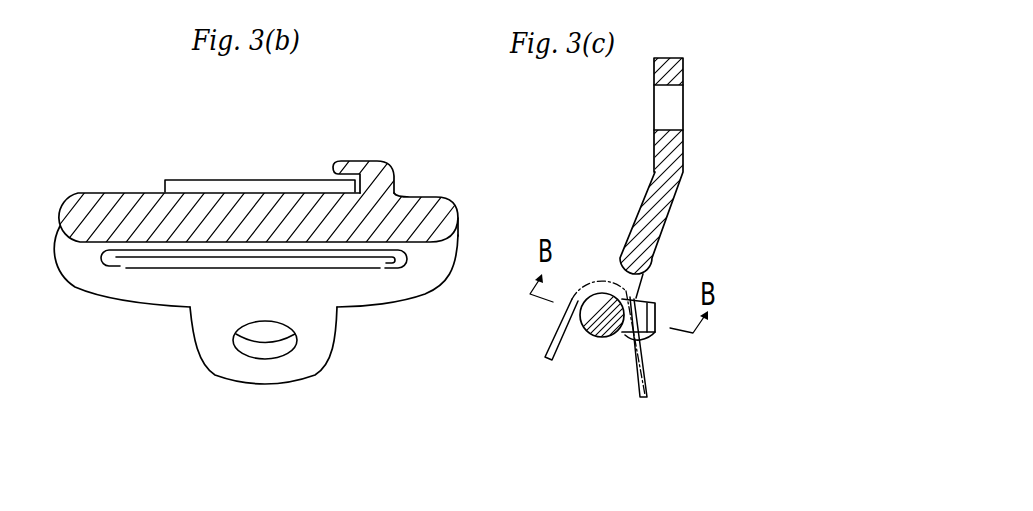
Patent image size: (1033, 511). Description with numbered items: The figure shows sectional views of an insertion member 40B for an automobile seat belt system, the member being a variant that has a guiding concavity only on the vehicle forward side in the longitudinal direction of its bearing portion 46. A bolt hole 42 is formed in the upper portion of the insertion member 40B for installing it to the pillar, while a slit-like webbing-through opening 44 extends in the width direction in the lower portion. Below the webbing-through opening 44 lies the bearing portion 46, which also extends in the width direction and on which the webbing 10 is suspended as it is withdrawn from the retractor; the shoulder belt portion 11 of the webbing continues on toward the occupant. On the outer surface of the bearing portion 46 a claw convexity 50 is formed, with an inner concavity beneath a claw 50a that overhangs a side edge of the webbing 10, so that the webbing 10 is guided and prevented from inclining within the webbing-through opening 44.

In FIG. 3B, the webbing 10 is at (190, 178).
In FIG. 3C, the webbing 10 is at (655, 390).
In FIG. 3C, the shoulder belt portion 11 is at (545, 342).
In FIG. 3B, the insertion member 40B is at (88, 300).
In FIG. 3C, the insertion member 40B is at (642, 221).
In FIG. 3B, the bolt hole 42 is at (254, 350).
In FIG. 3C, the bolt hole 42 is at (668, 110).
In FIG. 3B, the webbing-through opening 44 is at (364, 247).
In FIG. 3C, the webbing-through opening 44 is at (604, 283).
In FIG. 3B, the bearing portion 46 is at (157, 233).
In FIG. 3C, the bearing portion 46 is at (594, 340).
In FIG. 3B, the claw convexity 50 is at (408, 170).
In FIG. 3C, the claw convexity 50 is at (649, 292).
In FIG. 3B, the claw 50a is at (338, 158).
In FIG. 3C, the claw 50a is at (657, 337).